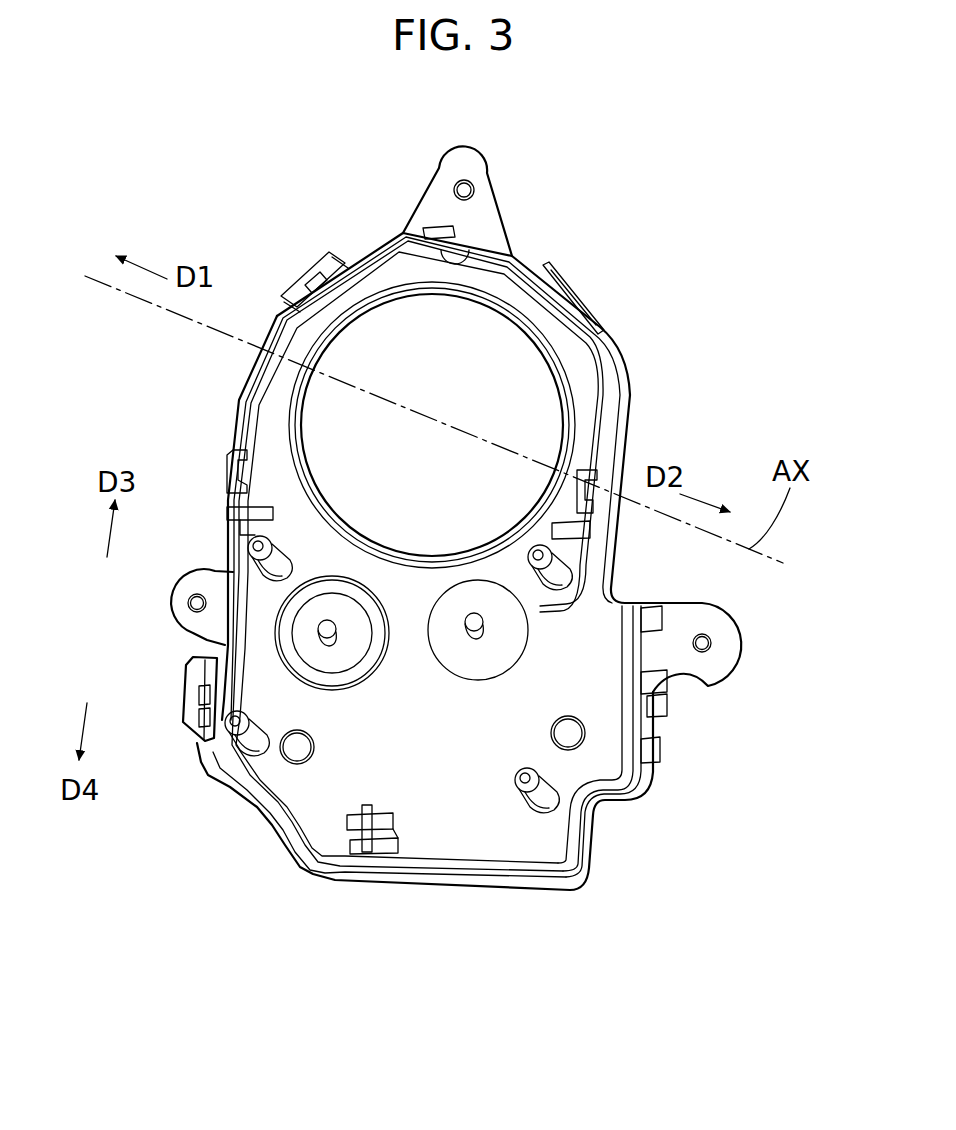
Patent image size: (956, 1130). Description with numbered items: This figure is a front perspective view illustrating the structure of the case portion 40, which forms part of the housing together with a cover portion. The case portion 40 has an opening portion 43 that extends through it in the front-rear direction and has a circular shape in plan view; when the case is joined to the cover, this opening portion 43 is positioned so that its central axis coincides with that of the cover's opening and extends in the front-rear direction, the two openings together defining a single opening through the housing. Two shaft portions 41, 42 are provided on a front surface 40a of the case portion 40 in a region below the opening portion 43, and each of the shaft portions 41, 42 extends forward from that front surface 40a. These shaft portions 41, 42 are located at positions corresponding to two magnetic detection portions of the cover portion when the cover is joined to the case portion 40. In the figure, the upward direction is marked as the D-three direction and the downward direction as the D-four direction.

The case portion 40 is at (634, 878).
The front surface 40a is at (323, 792).
The shaft portion 41 is at (320, 622).
The shaft portion 42 is at (478, 613).
The opening portion 43 is at (305, 441).